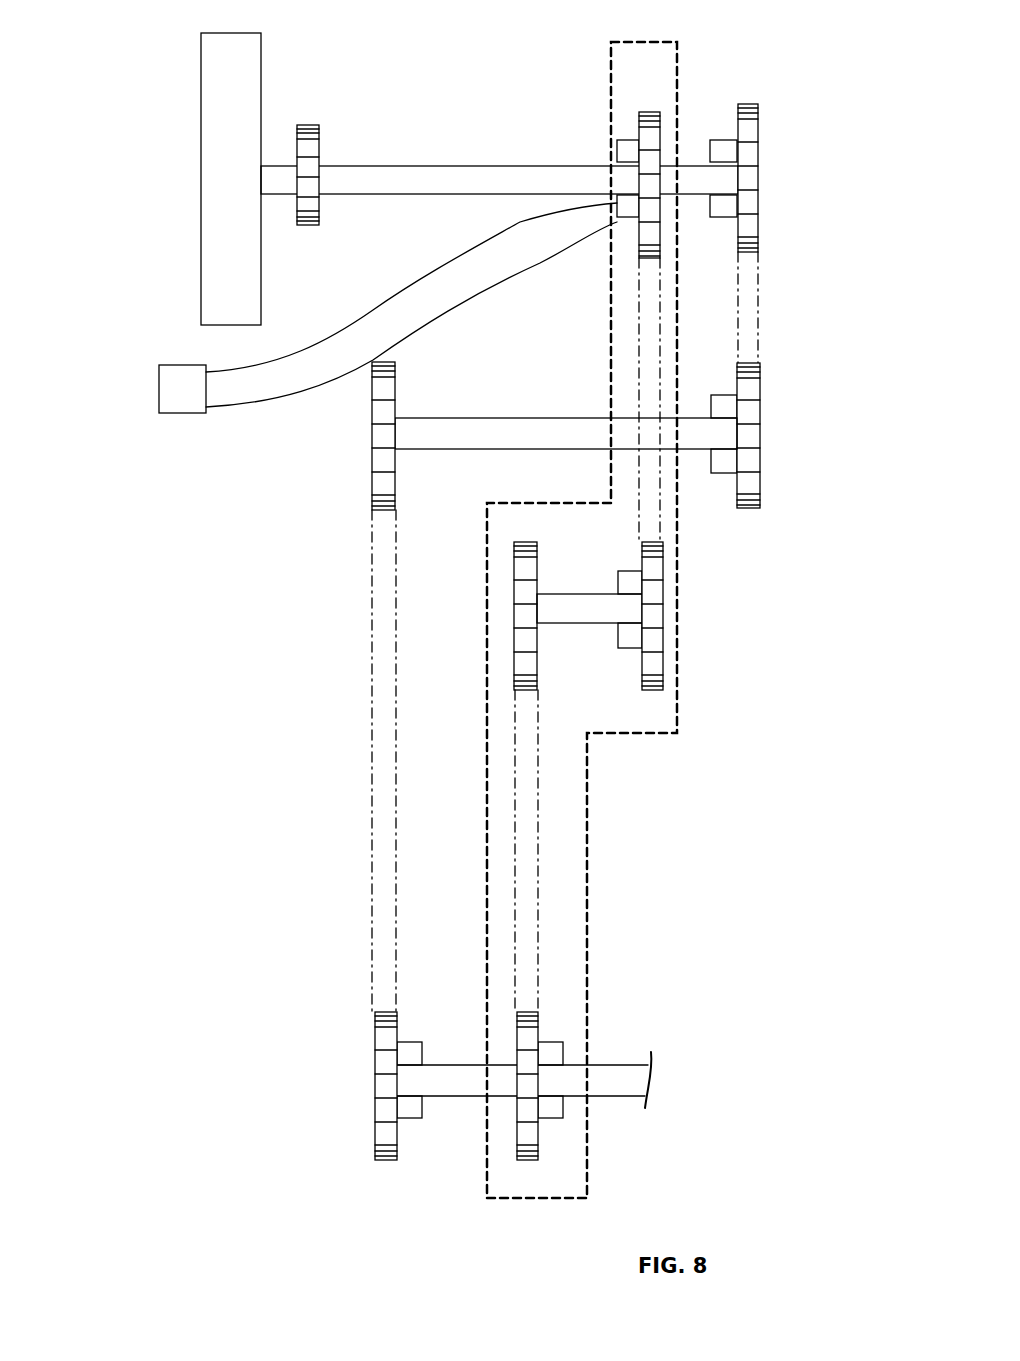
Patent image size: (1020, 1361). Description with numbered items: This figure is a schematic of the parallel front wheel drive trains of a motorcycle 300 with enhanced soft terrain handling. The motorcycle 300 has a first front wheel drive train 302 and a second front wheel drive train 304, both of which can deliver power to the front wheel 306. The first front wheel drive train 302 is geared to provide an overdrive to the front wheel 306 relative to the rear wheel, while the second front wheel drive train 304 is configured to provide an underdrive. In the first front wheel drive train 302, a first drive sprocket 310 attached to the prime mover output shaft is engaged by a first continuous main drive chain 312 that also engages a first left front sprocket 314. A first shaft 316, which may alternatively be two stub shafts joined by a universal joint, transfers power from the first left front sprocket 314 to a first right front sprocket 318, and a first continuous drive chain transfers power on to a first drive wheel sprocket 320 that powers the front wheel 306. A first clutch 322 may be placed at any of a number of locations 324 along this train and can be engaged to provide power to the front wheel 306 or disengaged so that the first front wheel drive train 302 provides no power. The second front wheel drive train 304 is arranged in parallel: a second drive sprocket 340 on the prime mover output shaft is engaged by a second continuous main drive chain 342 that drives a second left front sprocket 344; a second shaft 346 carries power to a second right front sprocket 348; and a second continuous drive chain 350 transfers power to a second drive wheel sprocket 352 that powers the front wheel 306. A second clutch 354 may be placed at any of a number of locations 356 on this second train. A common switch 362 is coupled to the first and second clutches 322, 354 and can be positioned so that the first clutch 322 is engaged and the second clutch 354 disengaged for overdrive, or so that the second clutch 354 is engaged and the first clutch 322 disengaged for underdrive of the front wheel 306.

The motorcycle 300 is at (167, 1118).
The first front wheel drive train 302 is at (384, 1172).
The second front wheel drive train 304 is at (527, 1172).
The front wheel 306 is at (201, 140).
The first drive sprocket 310 is at (375, 1055).
The first continuous main drive chain 312 is at (372, 720).
The first left front sprocket 314 is at (372, 440).
The first shaft 316 is at (484, 418).
The first right front sprocket 318 is at (760, 450).
The first drive wheel sprocket 320 is at (760, 150).
The first clutch 322 is at (722, 140).
The locations 324 is at (722, 217).
The second drive sprocket 340 is at (517, 1042).
The second continuous main drive chain 342 is at (538, 840).
The second left front sprocket 344 is at (514, 622).
The second shaft 346 is at (578, 610).
The second right front sprocket 348 is at (663, 617).
The second continuous drive chain 350 is at (640, 315).
The second drive wheel sprocket 352 is at (310, 125).
The second clutch 354 is at (617, 143).
The locations 356 is at (617, 222).
The common switch 362 is at (159, 395).